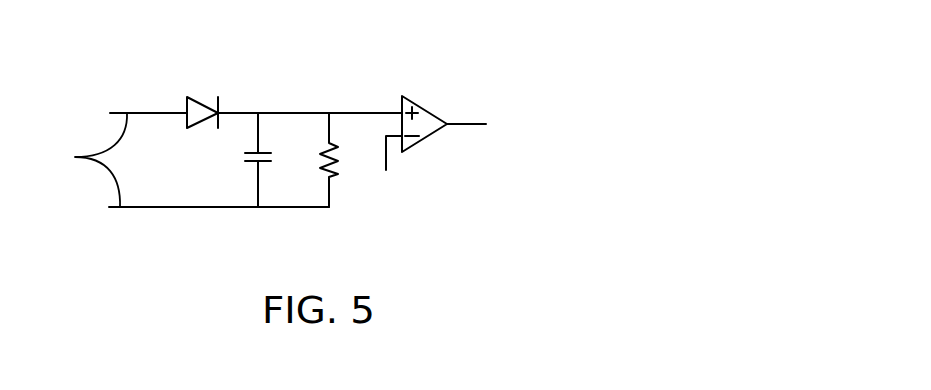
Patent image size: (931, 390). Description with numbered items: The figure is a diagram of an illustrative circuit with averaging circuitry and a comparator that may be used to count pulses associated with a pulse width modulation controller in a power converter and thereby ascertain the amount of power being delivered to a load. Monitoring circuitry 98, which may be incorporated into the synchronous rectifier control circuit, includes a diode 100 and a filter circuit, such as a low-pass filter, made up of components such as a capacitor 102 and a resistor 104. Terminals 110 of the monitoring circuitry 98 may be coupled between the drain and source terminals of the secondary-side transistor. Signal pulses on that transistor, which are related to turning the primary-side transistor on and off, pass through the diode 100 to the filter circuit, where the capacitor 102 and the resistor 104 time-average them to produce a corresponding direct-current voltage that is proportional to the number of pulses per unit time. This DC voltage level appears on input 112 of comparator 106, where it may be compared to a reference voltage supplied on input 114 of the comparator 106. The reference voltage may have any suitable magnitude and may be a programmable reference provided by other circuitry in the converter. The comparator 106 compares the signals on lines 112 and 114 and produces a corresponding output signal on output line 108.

The monitoring circuitry 98 is at (352, 59).
The diode 100 is at (202, 92).
The capacitor 102 is at (236, 164).
The resistor 104 is at (350, 175).
The comparator 106 is at (420, 106).
The output line 108 is at (472, 124).
The terminals 110 is at (76, 157).
The input 112 is at (363, 112).
The input 114 is at (388, 158).